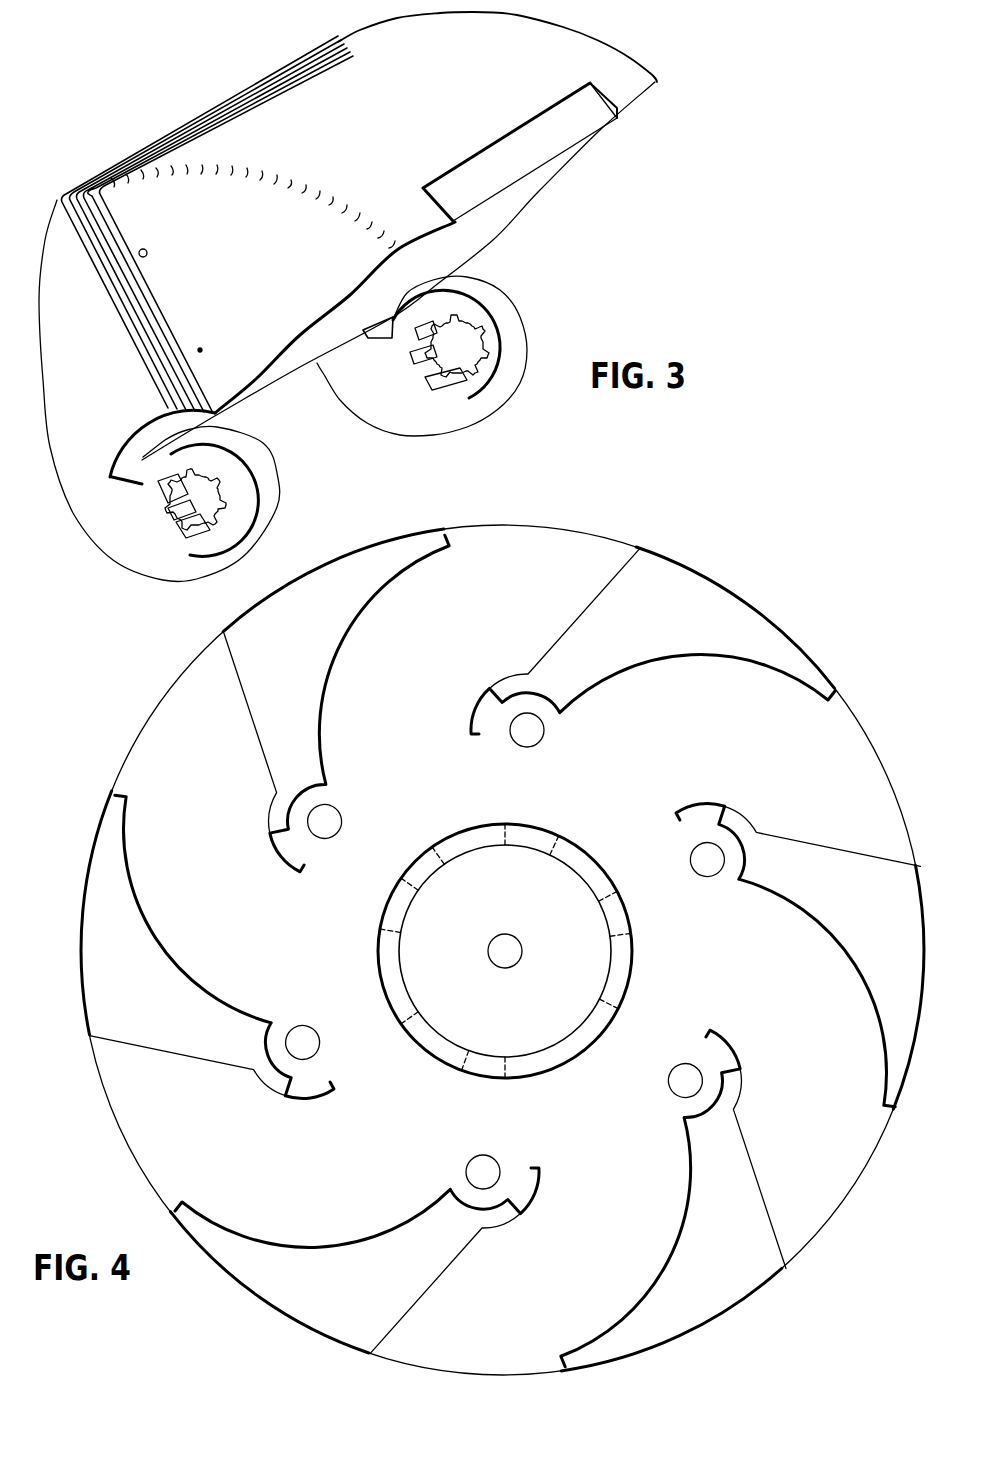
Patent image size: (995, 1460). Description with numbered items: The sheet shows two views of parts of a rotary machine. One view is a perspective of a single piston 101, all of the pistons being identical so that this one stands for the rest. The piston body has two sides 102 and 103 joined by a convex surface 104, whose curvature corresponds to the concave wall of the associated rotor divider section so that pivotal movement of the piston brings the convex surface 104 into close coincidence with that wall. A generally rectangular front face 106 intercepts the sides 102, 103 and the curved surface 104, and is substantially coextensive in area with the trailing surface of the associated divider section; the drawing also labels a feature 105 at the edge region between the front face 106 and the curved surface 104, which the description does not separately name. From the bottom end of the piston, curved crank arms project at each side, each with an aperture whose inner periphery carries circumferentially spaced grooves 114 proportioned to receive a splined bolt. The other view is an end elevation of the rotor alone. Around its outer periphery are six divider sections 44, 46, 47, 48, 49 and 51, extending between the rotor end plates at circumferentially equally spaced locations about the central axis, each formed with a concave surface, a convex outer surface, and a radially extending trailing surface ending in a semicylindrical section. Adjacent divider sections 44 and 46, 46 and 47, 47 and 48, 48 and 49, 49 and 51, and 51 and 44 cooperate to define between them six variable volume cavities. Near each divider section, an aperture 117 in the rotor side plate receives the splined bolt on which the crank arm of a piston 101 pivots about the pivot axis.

In FIG. 3, the piston 101 is at (214, 97).
In FIG. 3, the side of piston 102 is at (178, 534).
In FIG. 3, the side of piston 103 is at (620, 46).
In FIG. 3, the convex surface 104 is at (401, 116).
In FIG. 3, the handle bar 105 is at (518, 148).
In FIG. 3, the front face 106 is at (464, 272).
In FIG. 3, the grooves 114 is at (428, 381).
In FIG. 4, the divider section 44 is at (659, 634).
In FIG. 4, the divider section 46 is at (867, 907).
In FIG. 4, the divider section 47 is at (729, 1227).
In FIG. 4, the divider section 48 is at (373, 1282).
In FIG. 4, the divider section 49 is at (155, 1002).
In FIG. 4, the divider section 51 is at (299, 657).
In FIG. 4, the aperture 117 is at (527, 732).